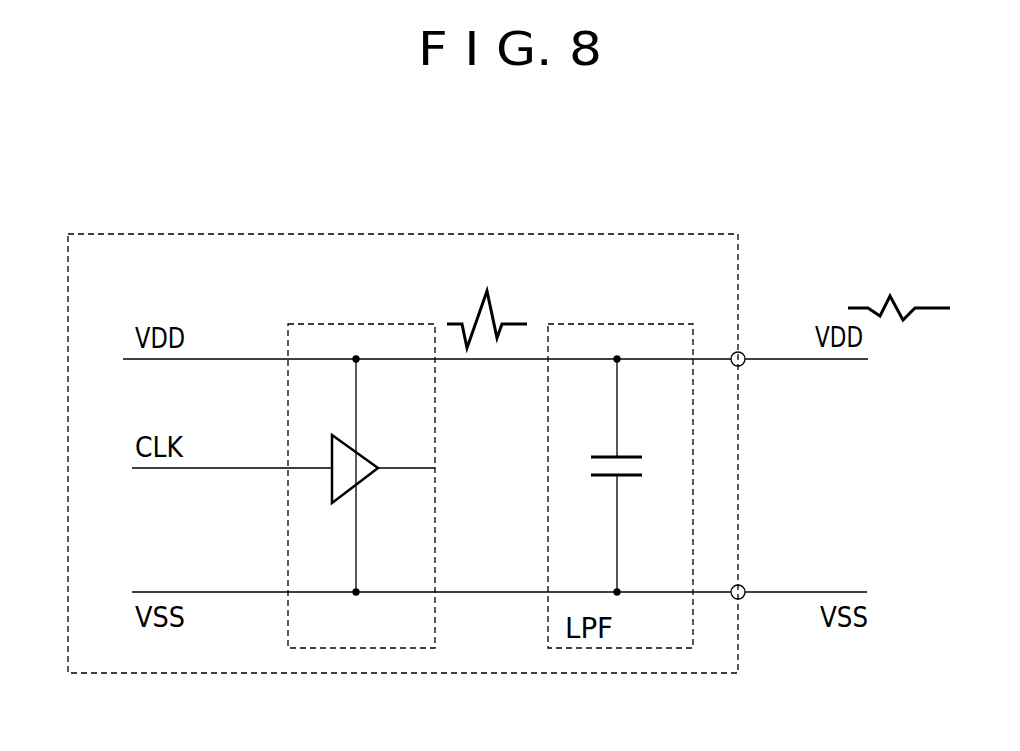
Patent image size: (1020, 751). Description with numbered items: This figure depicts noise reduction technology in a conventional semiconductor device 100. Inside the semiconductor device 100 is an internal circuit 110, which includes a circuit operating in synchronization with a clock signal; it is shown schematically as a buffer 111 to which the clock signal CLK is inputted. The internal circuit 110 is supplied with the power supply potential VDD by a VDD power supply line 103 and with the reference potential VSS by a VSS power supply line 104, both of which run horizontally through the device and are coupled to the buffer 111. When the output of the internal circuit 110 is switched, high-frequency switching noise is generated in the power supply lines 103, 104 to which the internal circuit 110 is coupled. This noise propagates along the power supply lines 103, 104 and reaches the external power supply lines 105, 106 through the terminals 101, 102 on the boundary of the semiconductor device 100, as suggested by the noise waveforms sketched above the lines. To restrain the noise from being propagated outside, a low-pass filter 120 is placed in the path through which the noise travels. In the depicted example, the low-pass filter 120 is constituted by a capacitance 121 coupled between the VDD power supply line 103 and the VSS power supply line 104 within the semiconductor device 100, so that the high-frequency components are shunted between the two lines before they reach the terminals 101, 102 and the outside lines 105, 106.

The semiconductor device 100 is at (489, 233).
The terminal 101 is at (745, 352).
The terminal 102 is at (745, 598).
The VDD power supply line 103 is at (238, 364).
The VSS power supply line 104 is at (217, 591).
The power supply line of the outside 105 is at (790, 365).
The power supply line of the outside 106 is at (798, 591).
The internal circuit 110 is at (364, 323).
The buffer 111 is at (368, 452).
The low-pass filter 120 is at (634, 323).
The capacitance 121 is at (633, 450).